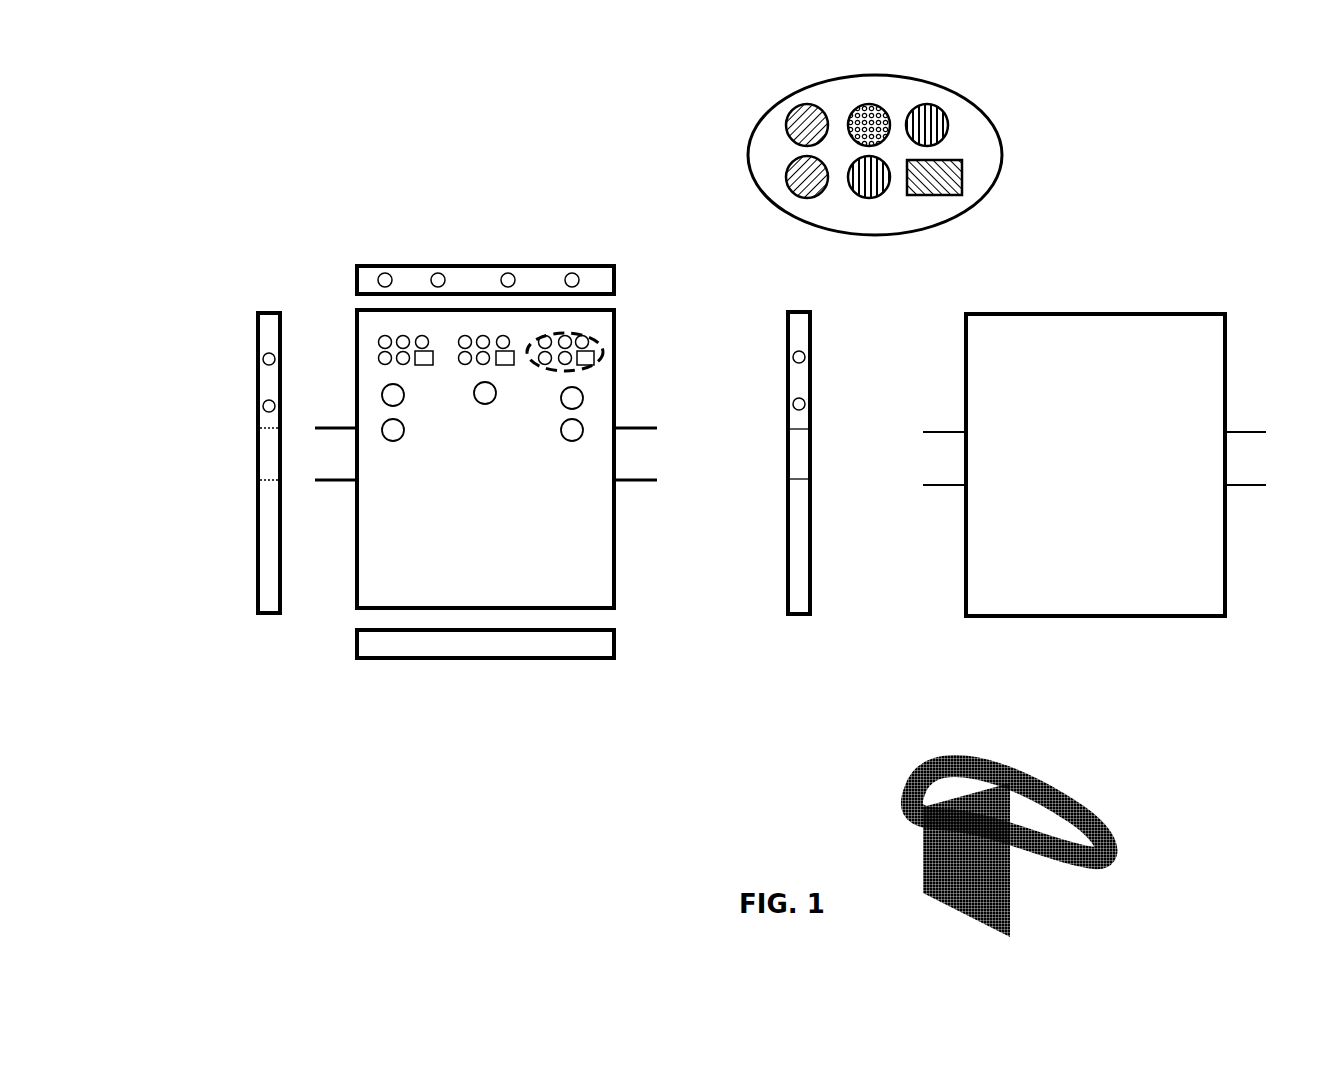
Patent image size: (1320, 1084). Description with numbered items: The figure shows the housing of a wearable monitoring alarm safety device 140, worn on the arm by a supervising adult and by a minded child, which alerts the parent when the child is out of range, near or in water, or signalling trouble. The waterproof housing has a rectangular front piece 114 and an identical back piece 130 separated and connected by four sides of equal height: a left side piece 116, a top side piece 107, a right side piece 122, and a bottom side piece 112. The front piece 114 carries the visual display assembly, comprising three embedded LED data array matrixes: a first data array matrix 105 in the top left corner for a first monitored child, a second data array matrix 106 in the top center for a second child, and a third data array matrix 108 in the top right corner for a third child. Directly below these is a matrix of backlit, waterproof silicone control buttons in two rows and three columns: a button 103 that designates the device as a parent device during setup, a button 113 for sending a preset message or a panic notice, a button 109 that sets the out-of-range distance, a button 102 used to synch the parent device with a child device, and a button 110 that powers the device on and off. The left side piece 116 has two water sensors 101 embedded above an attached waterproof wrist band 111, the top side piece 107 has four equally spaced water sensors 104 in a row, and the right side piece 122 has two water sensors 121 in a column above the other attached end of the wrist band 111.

The water sensors 101 is at (256, 361).
The synch button 102 is at (385, 420).
The parent designation button 103 is at (380, 393).
The water sensors 104 is at (389, 272).
The first data array matrix 105 is at (404, 330).
The second data array matrix 106 is at (482, 330).
The top side piece 107 is at (542, 263).
The third data array matrix 108 is at (604, 350).
The range setting button 109 is at (585, 398).
The power button 110 is at (585, 430).
The wrist band 111 is at (327, 486).
The bottom side piece 112 is at (560, 661).
The message/panic button 113 is at (487, 406).
The front piece 114 is at (616, 613).
The left side piece 116 is at (254, 548).
The water sensors 121 is at (814, 354).
The right side piece 122 is at (799, 618).
The back piece 130 is at (1112, 310).
The safety device 140 is at (904, 823).